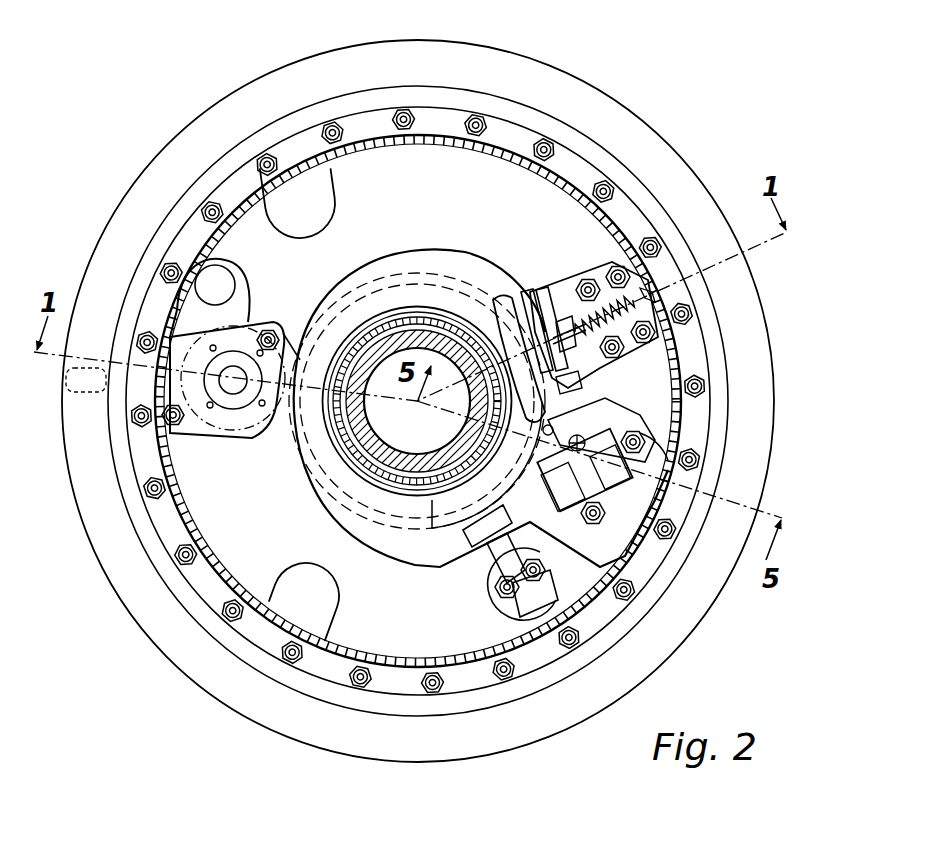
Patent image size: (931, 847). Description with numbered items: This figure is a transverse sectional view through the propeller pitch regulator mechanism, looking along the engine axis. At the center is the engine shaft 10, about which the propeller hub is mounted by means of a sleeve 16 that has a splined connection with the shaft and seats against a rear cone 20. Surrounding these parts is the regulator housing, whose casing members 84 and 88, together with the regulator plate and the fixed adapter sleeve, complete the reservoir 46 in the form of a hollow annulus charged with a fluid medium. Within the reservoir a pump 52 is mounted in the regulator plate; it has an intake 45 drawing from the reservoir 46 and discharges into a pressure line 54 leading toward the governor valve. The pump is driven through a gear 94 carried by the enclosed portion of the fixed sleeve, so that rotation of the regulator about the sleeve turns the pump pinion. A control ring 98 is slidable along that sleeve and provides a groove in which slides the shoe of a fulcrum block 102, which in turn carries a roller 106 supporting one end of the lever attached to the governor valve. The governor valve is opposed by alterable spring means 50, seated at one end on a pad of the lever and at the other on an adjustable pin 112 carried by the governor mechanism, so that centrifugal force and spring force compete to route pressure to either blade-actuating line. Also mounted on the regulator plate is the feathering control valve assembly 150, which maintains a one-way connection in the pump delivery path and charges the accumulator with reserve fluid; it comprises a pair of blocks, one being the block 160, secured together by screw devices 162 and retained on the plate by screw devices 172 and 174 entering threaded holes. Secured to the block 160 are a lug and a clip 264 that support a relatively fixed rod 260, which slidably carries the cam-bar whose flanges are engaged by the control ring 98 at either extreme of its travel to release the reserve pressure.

The engine shaft 10 is at (423, 470).
The sleeve 16 is at (372, 470).
The rear cone 20 is at (472, 447).
The intake 45 is at (146, 360).
The reservoir 46 is at (540, 198).
The spring means 50 is at (607, 298).
The pump 52 is at (236, 400).
The pressure line 54 is at (183, 322).
The casing member 84 is at (514, 52).
The casing member 88 is at (404, 140).
The gear 94 is at (332, 316).
The control ring 98 is at (503, 300).
The fulcrum block 102 is at (536, 300).
The roller 106 is at (566, 318).
The adjustable pin 112 is at (655, 296).
The feathering control valve assembly 150 is at (652, 433).
The block 160 is at (576, 495).
The screw devices 162 is at (520, 482).
The screw device 172 is at (650, 440).
The screw device 174 is at (592, 522).
The rod 260 is at (603, 415).
The clip 264 is at (600, 402).